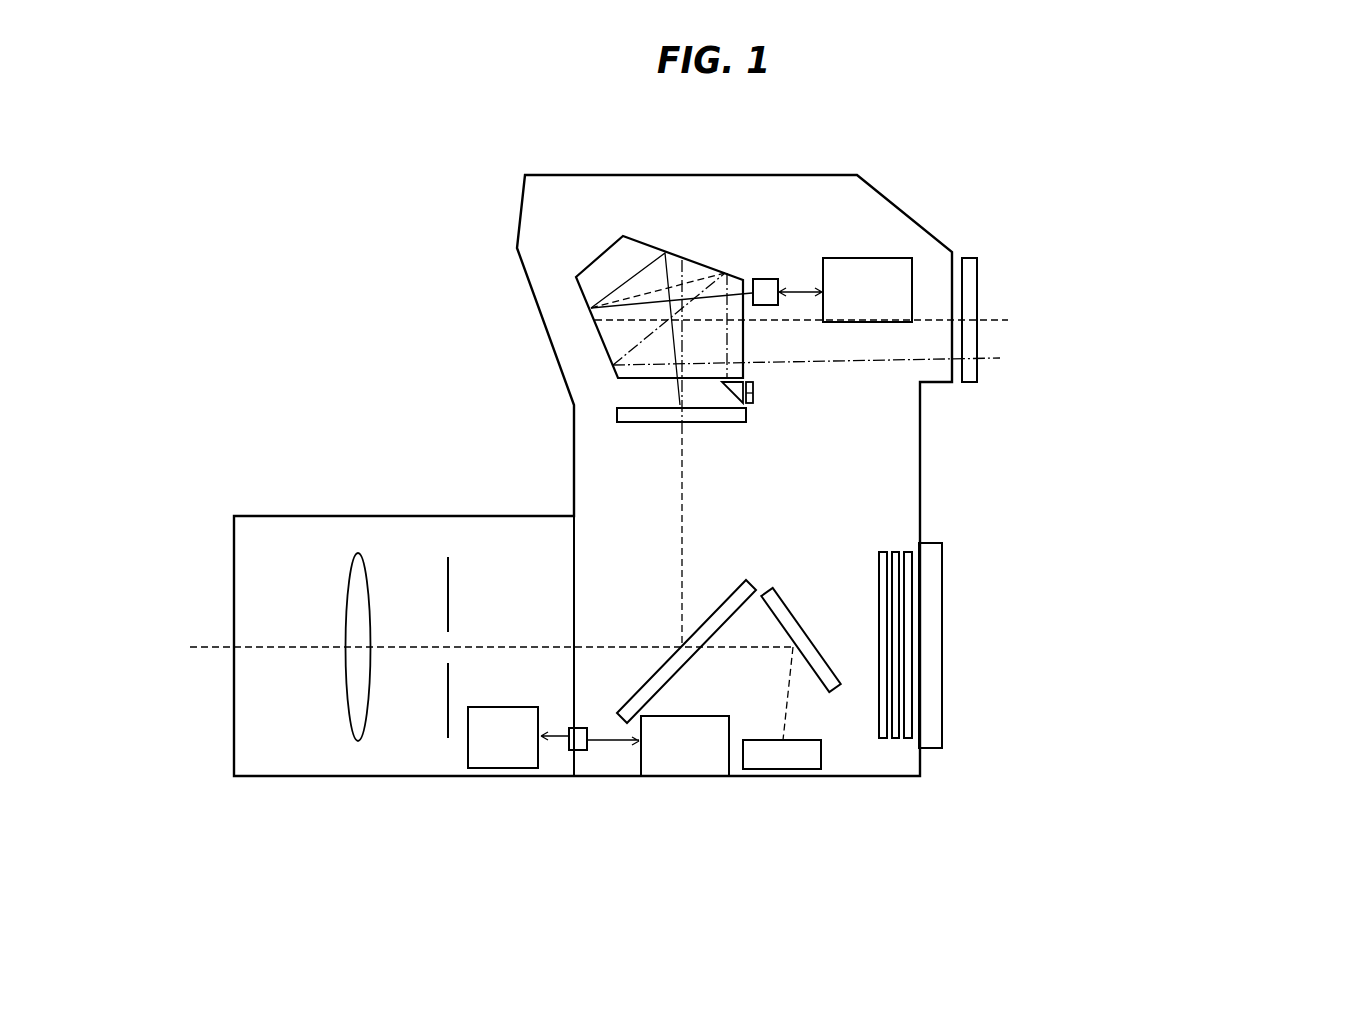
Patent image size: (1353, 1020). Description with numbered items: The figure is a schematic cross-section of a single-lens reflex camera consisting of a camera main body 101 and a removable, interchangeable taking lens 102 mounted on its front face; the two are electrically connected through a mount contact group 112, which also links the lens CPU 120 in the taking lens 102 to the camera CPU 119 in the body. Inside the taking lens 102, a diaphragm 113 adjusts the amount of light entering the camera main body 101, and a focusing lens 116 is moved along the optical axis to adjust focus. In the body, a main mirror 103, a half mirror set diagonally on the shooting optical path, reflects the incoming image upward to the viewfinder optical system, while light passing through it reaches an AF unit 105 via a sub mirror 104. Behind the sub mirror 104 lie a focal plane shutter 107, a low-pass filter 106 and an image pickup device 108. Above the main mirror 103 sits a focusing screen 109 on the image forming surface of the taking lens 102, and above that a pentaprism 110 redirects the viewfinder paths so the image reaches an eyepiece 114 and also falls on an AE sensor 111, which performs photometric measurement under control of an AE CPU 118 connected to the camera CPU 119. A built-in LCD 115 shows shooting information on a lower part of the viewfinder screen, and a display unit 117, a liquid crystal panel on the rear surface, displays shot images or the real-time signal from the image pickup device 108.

The camera main body 101 is at (766, 168).
The taking lens 102 is at (337, 515).
The main mirror 103 is at (668, 662).
The sub mirror 104 is at (765, 592).
The AF unit 105 is at (785, 771).
The low-pass filter 106 is at (893, 740).
The focal plane shutter 107 is at (882, 550).
The image pickup device 108 is at (911, 549).
The focusing screen 109 is at (703, 423).
The pentaprism 110 is at (648, 244).
The AE sensor 111 is at (765, 278).
The mount contact group 112 is at (580, 751).
The diaphragm 113 is at (472, 565).
The eyepiece 114 is at (970, 257).
The built-in LCD 115 is at (754, 397).
The focusing lens 116 is at (357, 741).
The display unit 117 is at (943, 647).
The AE CPU 118 is at (862, 323).
The camera CPU 119 is at (700, 715).
The lens CPU 120 is at (511, 706).